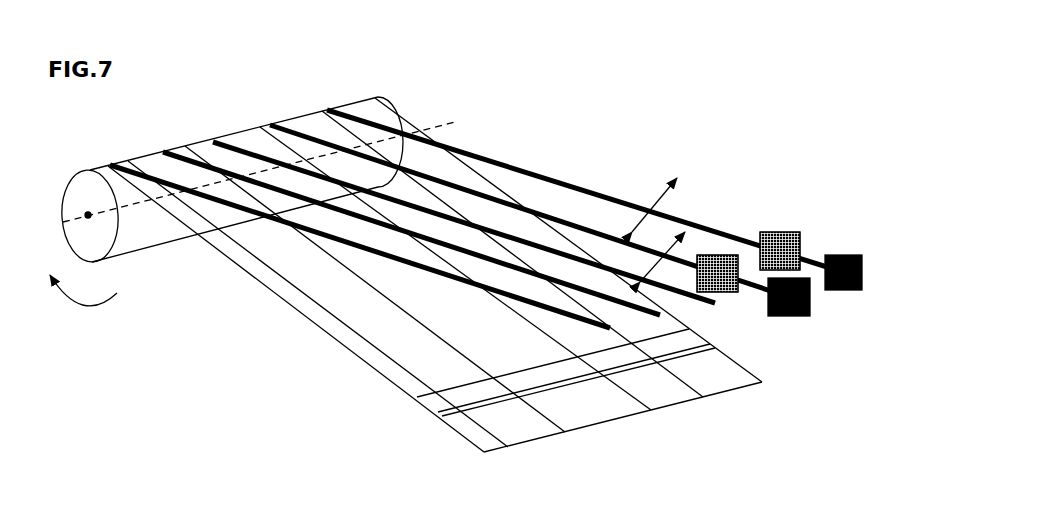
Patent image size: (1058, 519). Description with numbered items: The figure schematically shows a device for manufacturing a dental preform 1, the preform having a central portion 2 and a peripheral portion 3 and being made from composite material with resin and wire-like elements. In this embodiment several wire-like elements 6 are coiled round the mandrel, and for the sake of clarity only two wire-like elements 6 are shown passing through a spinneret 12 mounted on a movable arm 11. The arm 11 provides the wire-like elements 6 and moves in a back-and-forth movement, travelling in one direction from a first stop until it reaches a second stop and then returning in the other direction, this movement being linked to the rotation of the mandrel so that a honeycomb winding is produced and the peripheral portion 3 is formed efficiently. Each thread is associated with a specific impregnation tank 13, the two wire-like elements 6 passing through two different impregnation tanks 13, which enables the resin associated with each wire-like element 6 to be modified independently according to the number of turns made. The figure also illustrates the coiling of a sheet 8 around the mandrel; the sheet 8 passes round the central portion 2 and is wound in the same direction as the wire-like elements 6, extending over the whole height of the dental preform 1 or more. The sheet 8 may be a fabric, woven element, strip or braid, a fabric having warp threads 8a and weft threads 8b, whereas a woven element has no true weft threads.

The dental preform 1 is at (66, 193).
The central portion 2 is at (88, 212).
The peripheral portion 3 is at (93, 243).
The second wire-like element 6 is at (527, 175).
The sheet 8 is at (753, 388).
The warp threads 8a is at (363, 281).
The weft threads 8b is at (458, 393).
The arm 11 is at (663, 200).
The spinneret 12 is at (866, 272).
The impregnation tank 13 is at (790, 236).